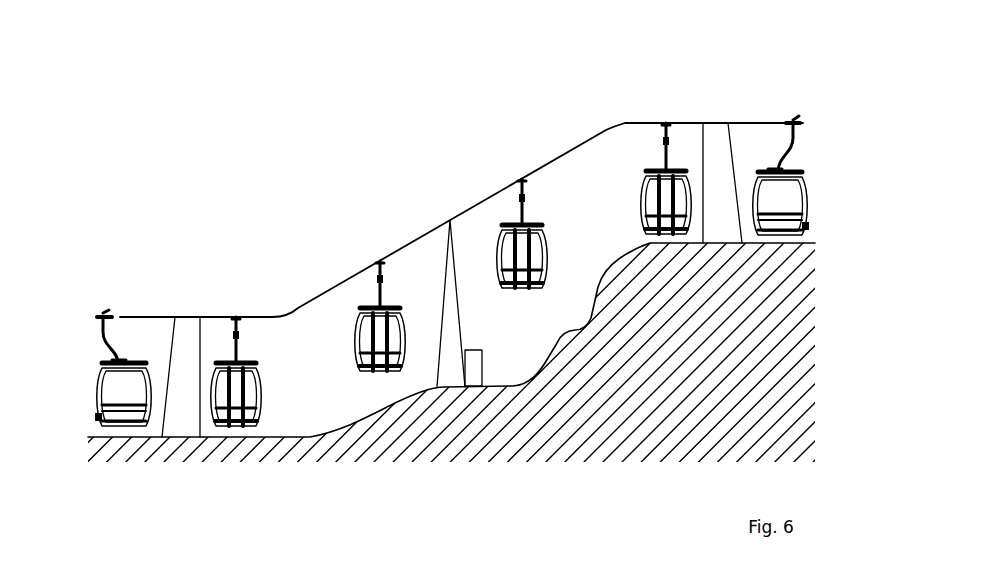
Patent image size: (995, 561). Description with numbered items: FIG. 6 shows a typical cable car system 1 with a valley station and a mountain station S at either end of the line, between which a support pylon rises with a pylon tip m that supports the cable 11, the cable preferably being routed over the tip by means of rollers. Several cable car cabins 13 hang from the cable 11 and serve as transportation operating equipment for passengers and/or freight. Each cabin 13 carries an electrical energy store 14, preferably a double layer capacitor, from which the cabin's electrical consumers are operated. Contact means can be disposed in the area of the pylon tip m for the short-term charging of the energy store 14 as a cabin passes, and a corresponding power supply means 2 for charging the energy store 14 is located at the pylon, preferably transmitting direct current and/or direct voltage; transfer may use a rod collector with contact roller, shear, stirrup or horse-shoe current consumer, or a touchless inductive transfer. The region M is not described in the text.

The cable car system 1 is at (177, 137).
The cable 11 is at (560, 160).
The cable car cabin 13 is at (100, 388).
The energy store 14 is at (512, 213).
The power supply means 2 is at (473, 368).
The station S is at (250, 296).
The mast zone M is at (439, 202).
The pylon tip m is at (415, 257).